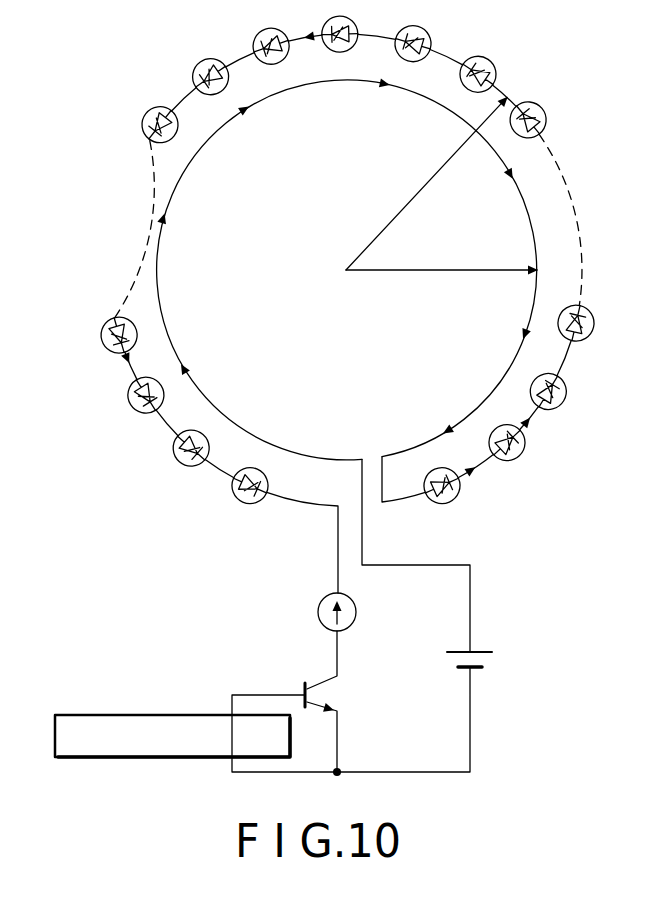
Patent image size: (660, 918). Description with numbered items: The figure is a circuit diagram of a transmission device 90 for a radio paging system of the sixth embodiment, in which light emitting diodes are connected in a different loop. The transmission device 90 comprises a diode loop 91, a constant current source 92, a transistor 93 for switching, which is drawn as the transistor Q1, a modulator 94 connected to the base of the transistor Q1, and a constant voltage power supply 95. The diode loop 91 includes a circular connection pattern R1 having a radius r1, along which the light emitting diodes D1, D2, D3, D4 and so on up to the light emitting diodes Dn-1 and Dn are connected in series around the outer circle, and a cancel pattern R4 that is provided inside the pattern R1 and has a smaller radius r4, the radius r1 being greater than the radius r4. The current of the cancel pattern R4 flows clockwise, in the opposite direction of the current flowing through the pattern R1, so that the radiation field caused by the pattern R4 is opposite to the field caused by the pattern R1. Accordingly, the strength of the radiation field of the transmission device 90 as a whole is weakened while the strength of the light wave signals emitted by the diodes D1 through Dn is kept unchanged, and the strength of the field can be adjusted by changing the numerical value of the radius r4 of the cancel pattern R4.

The transmission device 90 is at (378, 304).
The diode loop 91 is at (543, 222).
The constant current source 92 is at (319, 612).
The transistor 93 is at (319, 701).
The modulator 94 is at (165, 715).
The constant voltage power supply 95 is at (488, 662).
The light emitting diode D1 is at (445, 499).
The light emitting diode D2 is at (513, 456).
The light emitting diode D3 is at (560, 401).
The light emitting diode D4 is at (593, 325).
The light emitting diode Dn is at (250, 499).
The light emitting diode Dn-1 is at (185, 463).
The transistor Q1 is at (357, 698).
The circular connection pattern R1 is at (560, 362).
The cancel pattern R4 is at (507, 370).
The radius r1 is at (428, 182).
The radius r4 is at (442, 260).